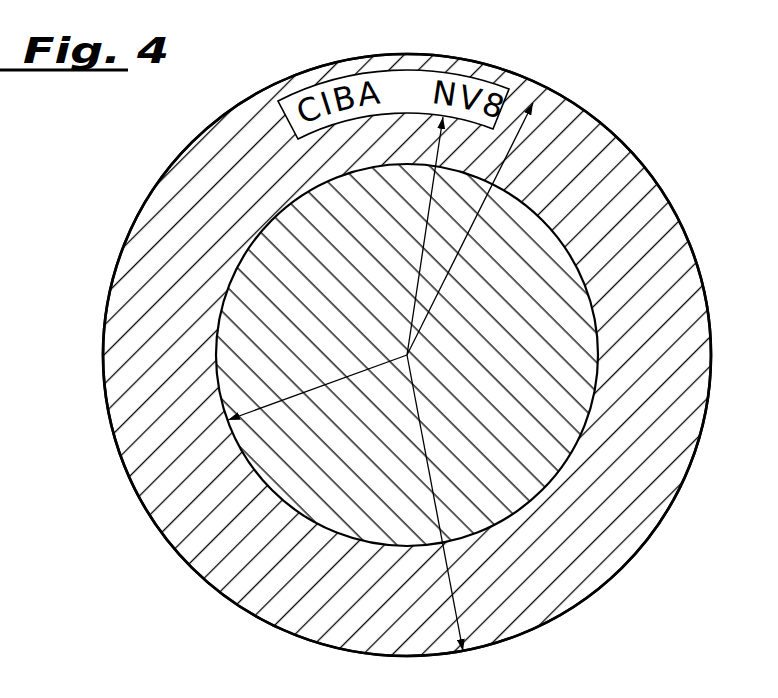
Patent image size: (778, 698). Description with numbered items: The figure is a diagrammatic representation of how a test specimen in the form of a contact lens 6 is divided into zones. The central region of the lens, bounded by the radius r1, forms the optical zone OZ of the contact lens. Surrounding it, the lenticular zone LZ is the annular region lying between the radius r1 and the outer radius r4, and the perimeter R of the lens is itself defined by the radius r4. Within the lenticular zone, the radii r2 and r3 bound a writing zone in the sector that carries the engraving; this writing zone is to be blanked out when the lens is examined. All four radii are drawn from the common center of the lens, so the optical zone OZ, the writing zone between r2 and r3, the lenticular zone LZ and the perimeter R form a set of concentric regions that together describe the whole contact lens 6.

The contact lens 6 is at (128, 232).
The lenticular zone LZ is at (650, 198).
The optical zone OZ is at (585, 432).
The perimeter R is at (197, 569).
The radius r1 is at (349, 380).
The radius r2 is at (430, 212).
The radius r3 is at (452, 258).
The radius r4 is at (427, 441).